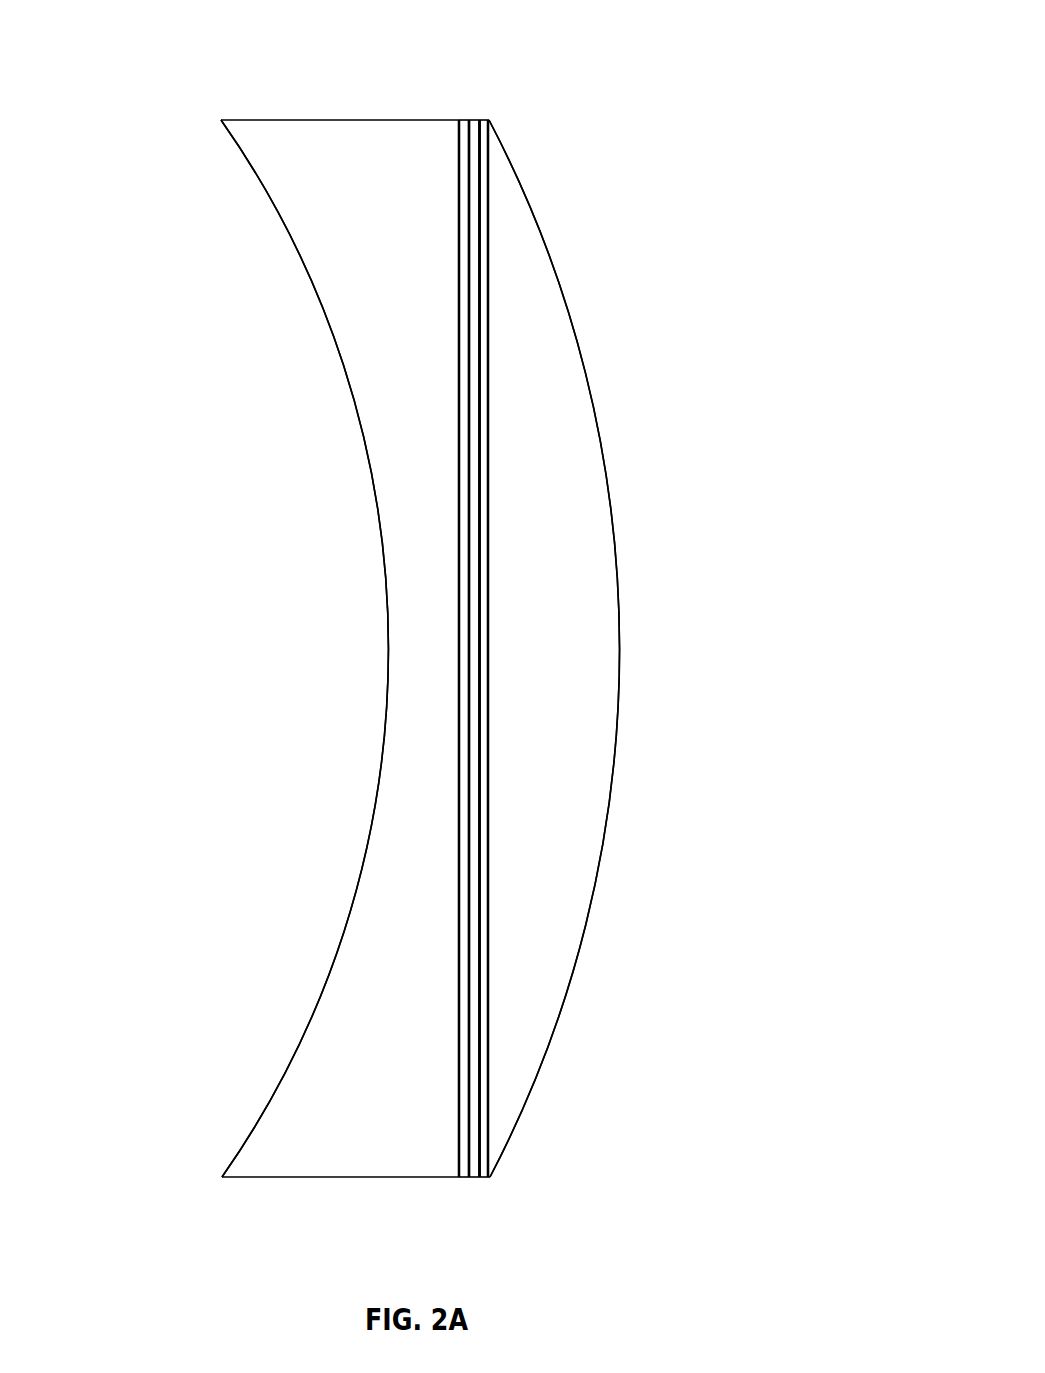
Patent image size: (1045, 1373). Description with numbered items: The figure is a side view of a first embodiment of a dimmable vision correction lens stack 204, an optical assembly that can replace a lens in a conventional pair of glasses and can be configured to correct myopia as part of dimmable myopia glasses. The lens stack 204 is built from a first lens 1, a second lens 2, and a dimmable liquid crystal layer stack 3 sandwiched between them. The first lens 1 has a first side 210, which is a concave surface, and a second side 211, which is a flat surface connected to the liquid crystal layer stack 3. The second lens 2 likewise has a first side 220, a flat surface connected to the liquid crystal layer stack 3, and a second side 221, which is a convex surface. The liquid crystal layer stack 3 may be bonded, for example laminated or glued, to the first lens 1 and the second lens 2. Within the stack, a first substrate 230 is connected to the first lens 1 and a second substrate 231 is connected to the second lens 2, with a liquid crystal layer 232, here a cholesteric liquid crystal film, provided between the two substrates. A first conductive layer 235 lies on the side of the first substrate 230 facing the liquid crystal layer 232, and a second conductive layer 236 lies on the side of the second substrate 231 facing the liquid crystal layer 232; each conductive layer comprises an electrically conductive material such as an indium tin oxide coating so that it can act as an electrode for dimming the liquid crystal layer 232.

The dimmable vision correction lens stack 204 is at (486, 594).
The liquid crystal layer stack 3 is at (486, 601).
The first lens 1 is at (267, 648).
The second lens 2 is at (678, 648).
The first substrate 230 is at (462, 162).
The second substrate 231 is at (484, 178).
The liquid crystal layer 232 is at (473, 135).
The first conductive layer 235 is at (468, 222).
The second conductive layer 236 is at (481, 222).
The first side 210 is at (348, 382).
The second side 211 is at (456, 442).
The first side 220 is at (500, 442).
The second side 221 is at (590, 386).